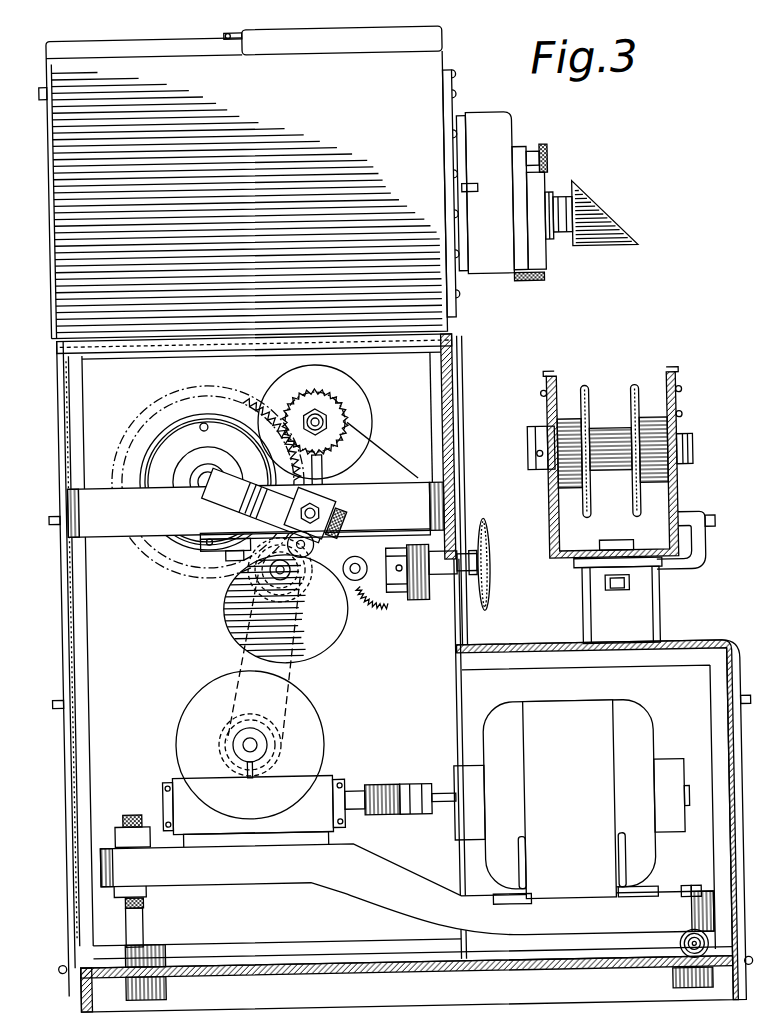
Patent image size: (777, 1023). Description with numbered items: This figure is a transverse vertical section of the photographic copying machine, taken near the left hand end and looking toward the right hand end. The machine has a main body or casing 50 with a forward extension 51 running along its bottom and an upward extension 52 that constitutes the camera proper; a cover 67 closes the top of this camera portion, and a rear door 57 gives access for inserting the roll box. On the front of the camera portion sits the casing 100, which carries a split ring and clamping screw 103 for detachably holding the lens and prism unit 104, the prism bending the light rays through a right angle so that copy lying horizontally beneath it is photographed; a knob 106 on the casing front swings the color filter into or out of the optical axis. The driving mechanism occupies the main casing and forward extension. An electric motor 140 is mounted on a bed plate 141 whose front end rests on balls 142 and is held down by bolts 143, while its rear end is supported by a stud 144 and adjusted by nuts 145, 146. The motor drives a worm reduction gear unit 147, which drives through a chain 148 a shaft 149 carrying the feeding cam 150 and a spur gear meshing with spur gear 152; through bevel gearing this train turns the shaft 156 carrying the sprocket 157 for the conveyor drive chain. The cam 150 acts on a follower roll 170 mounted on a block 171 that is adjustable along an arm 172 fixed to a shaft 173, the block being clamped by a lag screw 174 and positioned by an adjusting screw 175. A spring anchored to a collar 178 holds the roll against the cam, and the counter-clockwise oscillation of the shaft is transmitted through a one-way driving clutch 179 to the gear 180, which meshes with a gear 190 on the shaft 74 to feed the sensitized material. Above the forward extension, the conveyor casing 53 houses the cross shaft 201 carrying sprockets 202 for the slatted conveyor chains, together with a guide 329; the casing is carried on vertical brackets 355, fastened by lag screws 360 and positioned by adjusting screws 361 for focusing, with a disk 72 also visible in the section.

The cover 67 is at (330, 24).
The upward extension 52 is at (253, 186).
The rear door 57 is at (50, 110).
The casing 100 is at (487, 114).
The knob 106 is at (550, 137).
The lens and prism unit 104 is at (595, 210).
The split ring and clamping screw 103 is at (530, 292).
The main body or casing 50 is at (458, 393).
The forward extension 51 is at (722, 645).
The conveyor casing 53 is at (679, 500).
The gear 180 is at (258, 402).
The disk 72 is at (368, 402).
The gear 190 is at (347, 425).
The one-way driving clutch 179 is at (160, 445).
The collar 178 is at (192, 466).
The shaft 173 is at (212, 472).
The shaft 74 is at (327, 430).
The block 171 is at (320, 497).
The lag screw 174 is at (340, 497).
The adjusting screw 175 is at (350, 518).
The arm 172 is at (168, 522).
The follower roll 170 is at (313, 544).
The shaft 149 is at (275, 572).
The spur gear 152 is at (366, 602).
The feeding cam 150 is at (335, 628).
The shaft 156 is at (445, 585).
The sprocket 157 is at (500, 552).
The chain 148 is at (290, 676).
The worm reduction gear unit 147 is at (312, 724).
The electric motor 140 is at (640, 714).
The nut 146 is at (146, 822).
The nut 145 is at (150, 885).
The stud 144 is at (142, 928).
The bed plate 141 is at (372, 900).
The bolt 143 is at (692, 886).
The ball 142 is at (687, 934).
The sprocket 202 is at (632, 388).
The cross shaft 201 is at (609, 429).
The bracket 329 is at (540, 425).
The adjusting screw 361 is at (714, 531).
The vertical bracket 355 is at (660, 607).
The lag screw 360 is at (618, 592).